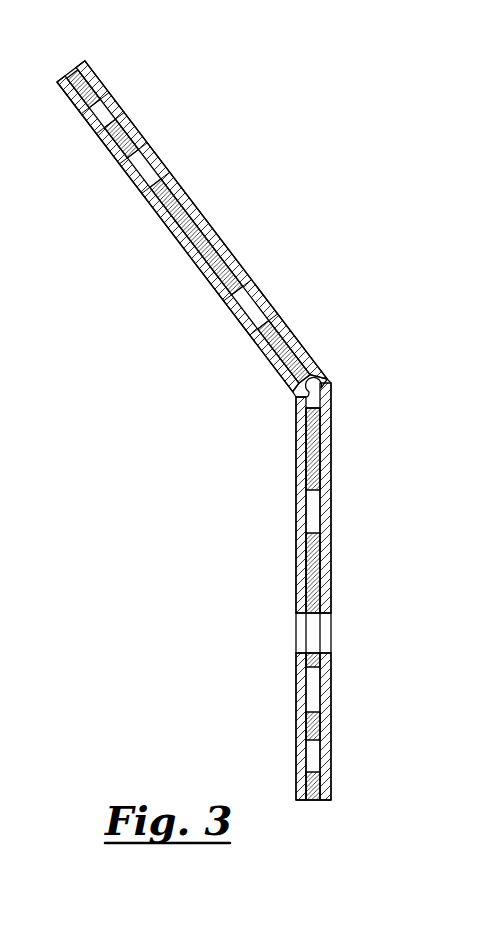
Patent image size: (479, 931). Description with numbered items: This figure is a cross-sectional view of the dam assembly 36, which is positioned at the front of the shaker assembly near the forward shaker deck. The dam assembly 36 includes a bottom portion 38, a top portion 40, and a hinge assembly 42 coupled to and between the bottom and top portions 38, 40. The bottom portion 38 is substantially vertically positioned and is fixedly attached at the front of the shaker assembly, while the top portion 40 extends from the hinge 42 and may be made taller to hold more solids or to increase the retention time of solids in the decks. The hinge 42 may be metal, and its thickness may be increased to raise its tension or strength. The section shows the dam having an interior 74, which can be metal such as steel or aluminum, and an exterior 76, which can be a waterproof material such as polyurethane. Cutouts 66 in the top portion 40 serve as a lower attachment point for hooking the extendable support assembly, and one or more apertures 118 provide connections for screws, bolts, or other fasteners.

The dam assembly 36 is at (248, 155).
The bottom portion 38 is at (332, 695).
The top portion 40 is at (125, 184).
The hinge assembly 42 is at (330, 378).
The cutout 66 is at (118, 102).
The interior 74 is at (90, 74).
The exterior 76 is at (215, 243).
The aperture 118 is at (325, 636).